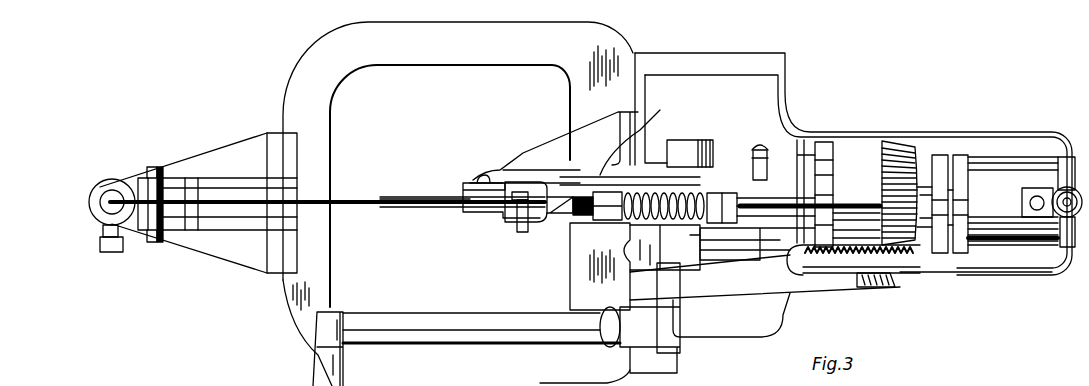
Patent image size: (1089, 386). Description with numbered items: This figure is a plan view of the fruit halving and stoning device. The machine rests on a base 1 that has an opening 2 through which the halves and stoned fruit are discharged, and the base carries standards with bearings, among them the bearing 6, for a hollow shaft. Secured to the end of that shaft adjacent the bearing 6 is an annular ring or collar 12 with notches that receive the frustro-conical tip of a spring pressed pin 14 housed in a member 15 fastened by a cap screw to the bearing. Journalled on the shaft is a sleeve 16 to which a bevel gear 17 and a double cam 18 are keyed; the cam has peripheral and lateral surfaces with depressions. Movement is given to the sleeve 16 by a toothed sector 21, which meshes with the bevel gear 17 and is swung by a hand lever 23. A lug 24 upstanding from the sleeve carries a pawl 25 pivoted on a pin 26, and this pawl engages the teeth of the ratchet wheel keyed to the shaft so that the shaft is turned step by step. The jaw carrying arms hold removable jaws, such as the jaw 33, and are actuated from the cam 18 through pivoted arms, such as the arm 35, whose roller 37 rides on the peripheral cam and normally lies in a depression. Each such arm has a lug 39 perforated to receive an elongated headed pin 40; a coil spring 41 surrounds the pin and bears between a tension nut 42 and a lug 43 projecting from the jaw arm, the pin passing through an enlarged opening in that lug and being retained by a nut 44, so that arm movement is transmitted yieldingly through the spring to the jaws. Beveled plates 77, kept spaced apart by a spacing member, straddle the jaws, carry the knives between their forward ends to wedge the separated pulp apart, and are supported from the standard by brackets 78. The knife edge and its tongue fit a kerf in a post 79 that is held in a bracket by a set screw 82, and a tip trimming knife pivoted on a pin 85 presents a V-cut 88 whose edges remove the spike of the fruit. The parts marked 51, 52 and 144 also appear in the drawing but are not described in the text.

The C-shaped frame 1 is at (300, 325).
The clamp post 2 is at (353, 333).
The knob 6 is at (1010, 180).
The housing 12 is at (1050, 250).
The bracket 14 is at (1058, 195).
The shaft 15 is at (1020, 193).
The rack bar 16 is at (775, 291).
The disc 17 is at (930, 190).
The disc 18 is at (822, 142).
The guide 21 is at (905, 280).
The cross bar 23 is at (480, 313).
The collar 24 is at (945, 195).
The housing bottom 25 is at (960, 272).
The bearing 26 is at (968, 197).
The rod 33 is at (430, 210).
The flange 35 is at (790, 140).
The gear 37 is at (850, 185).
The sleeve 39 is at (722, 238).
The pin 40 is at (745, 165).
The block 41 is at (677, 160).
The block 42 is at (649, 263).
The block 43 is at (600, 251).
The housing wall 44 is at (635, 132).
The bracket 51 is at (550, 223).
The bolt 52 is at (520, 232).
The rod 77 is at (410, 197).
The plate 78 is at (525, 157).
The eye 79 is at (100, 208).
The nut 82 is at (120, 251).
The wedge plate 85 is at (160, 166).
The bracket plates 88 is at (165, 242).
The tube 144 is at (719, 378).